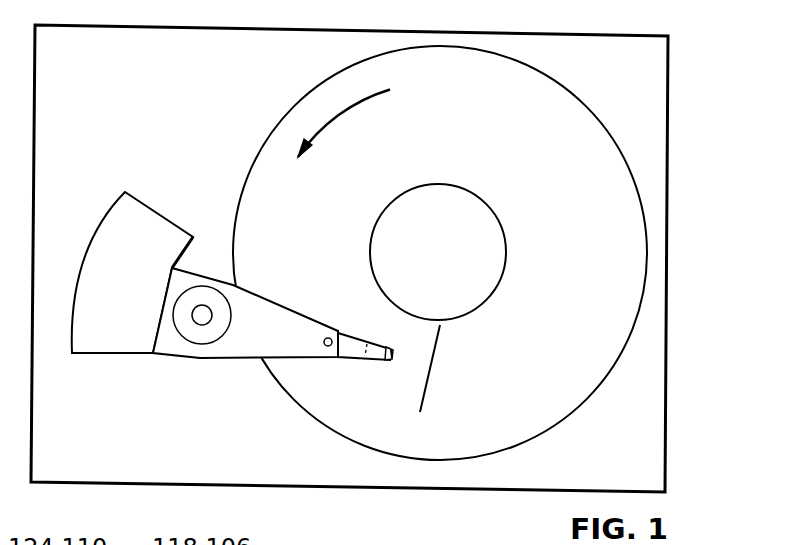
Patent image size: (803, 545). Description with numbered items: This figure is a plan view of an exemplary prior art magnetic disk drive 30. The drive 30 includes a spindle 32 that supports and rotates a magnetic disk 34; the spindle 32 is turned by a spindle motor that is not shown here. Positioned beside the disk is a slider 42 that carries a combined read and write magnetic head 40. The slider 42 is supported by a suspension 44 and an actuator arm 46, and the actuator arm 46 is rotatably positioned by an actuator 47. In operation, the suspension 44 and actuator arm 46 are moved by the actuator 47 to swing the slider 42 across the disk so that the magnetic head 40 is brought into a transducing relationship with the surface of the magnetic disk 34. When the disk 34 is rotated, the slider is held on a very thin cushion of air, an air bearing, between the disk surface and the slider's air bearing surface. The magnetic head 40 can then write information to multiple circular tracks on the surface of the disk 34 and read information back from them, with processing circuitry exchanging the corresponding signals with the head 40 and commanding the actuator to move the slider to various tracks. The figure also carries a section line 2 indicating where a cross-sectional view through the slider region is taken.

The magnetic disk drive 30 is at (687, 73).
The spindle 32 is at (480, 195).
The magnetic disk 34 is at (586, 276).
The magnetic head 40 is at (393, 362).
The slider 42 is at (392, 352).
The suspension 44 is at (353, 360).
The actuator arm 46 is at (290, 317).
The actuator 47 is at (165, 222).
The section line 2- 2 is at (442, 335).